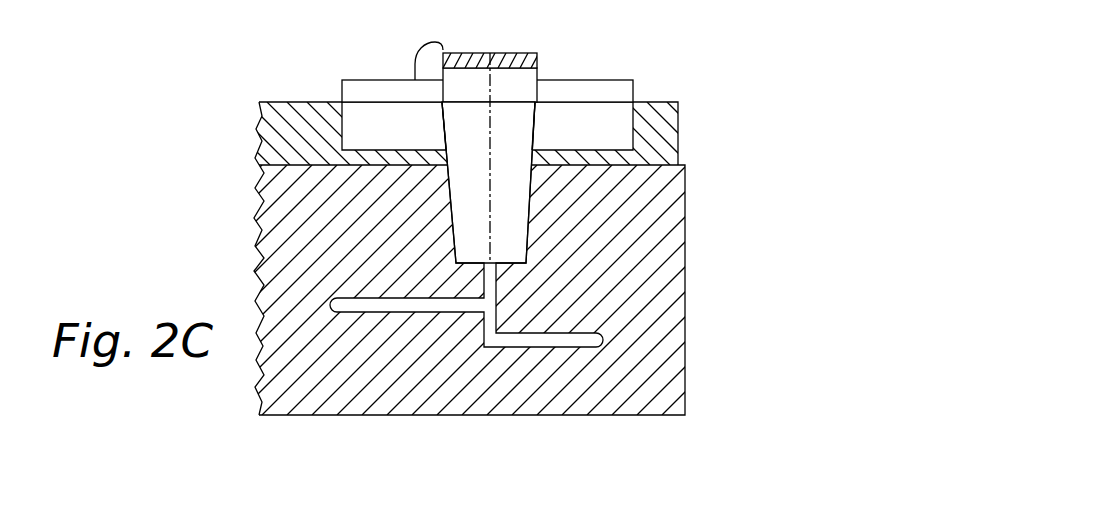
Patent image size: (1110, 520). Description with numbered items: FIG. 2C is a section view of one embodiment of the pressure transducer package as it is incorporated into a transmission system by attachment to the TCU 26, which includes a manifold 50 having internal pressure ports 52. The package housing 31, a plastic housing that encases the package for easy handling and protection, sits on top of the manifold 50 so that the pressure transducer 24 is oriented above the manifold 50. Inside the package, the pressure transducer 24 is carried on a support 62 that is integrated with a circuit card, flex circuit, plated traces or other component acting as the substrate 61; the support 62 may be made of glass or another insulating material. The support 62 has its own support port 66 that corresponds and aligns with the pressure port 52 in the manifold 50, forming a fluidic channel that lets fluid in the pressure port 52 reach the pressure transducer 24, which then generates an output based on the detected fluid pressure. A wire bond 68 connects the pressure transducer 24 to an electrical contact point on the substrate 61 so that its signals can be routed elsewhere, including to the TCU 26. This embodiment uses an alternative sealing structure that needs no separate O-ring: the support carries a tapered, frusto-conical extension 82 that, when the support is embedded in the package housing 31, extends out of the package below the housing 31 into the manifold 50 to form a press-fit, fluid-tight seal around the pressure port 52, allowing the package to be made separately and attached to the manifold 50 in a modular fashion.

The pressure transducer 24 is at (540, 58).
The TCU 26 is at (797, 210).
The package housing 31 is at (676, 133).
The manifold 50 is at (690, 165).
The pressure port 52 is at (368, 297).
The substrate 61 is at (620, 92).
The support 62 is at (357, 131).
The support port 66 is at (490, 123).
The wire bond 68 is at (444, 45).
The tapered extension 82 is at (467, 230).